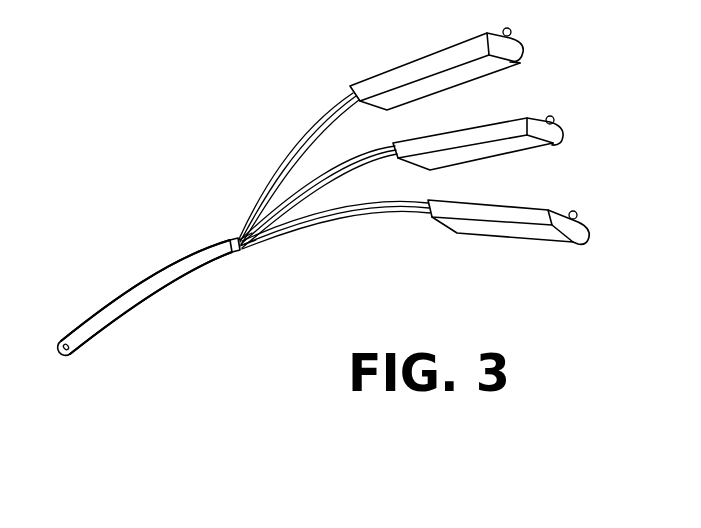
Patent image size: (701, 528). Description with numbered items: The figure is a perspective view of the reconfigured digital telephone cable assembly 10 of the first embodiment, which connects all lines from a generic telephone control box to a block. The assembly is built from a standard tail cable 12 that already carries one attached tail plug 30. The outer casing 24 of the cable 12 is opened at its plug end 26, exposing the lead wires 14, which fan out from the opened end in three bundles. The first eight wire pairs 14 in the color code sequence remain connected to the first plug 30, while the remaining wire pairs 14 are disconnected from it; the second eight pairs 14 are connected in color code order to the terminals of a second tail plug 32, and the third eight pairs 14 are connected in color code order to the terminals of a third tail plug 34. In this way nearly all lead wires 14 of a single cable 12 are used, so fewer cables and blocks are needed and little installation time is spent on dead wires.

The digital telephone cable assembly 10 is at (88, 118).
The tail cable 12 is at (157, 280).
The lead wires 14 is at (298, 158).
The outer casing 24 is at (206, 244).
The plug end 26 is at (232, 255).
The first tail plug 30 is at (420, 58).
The second tail plug 32 is at (493, 121).
The third tail plug 34 is at (520, 203).